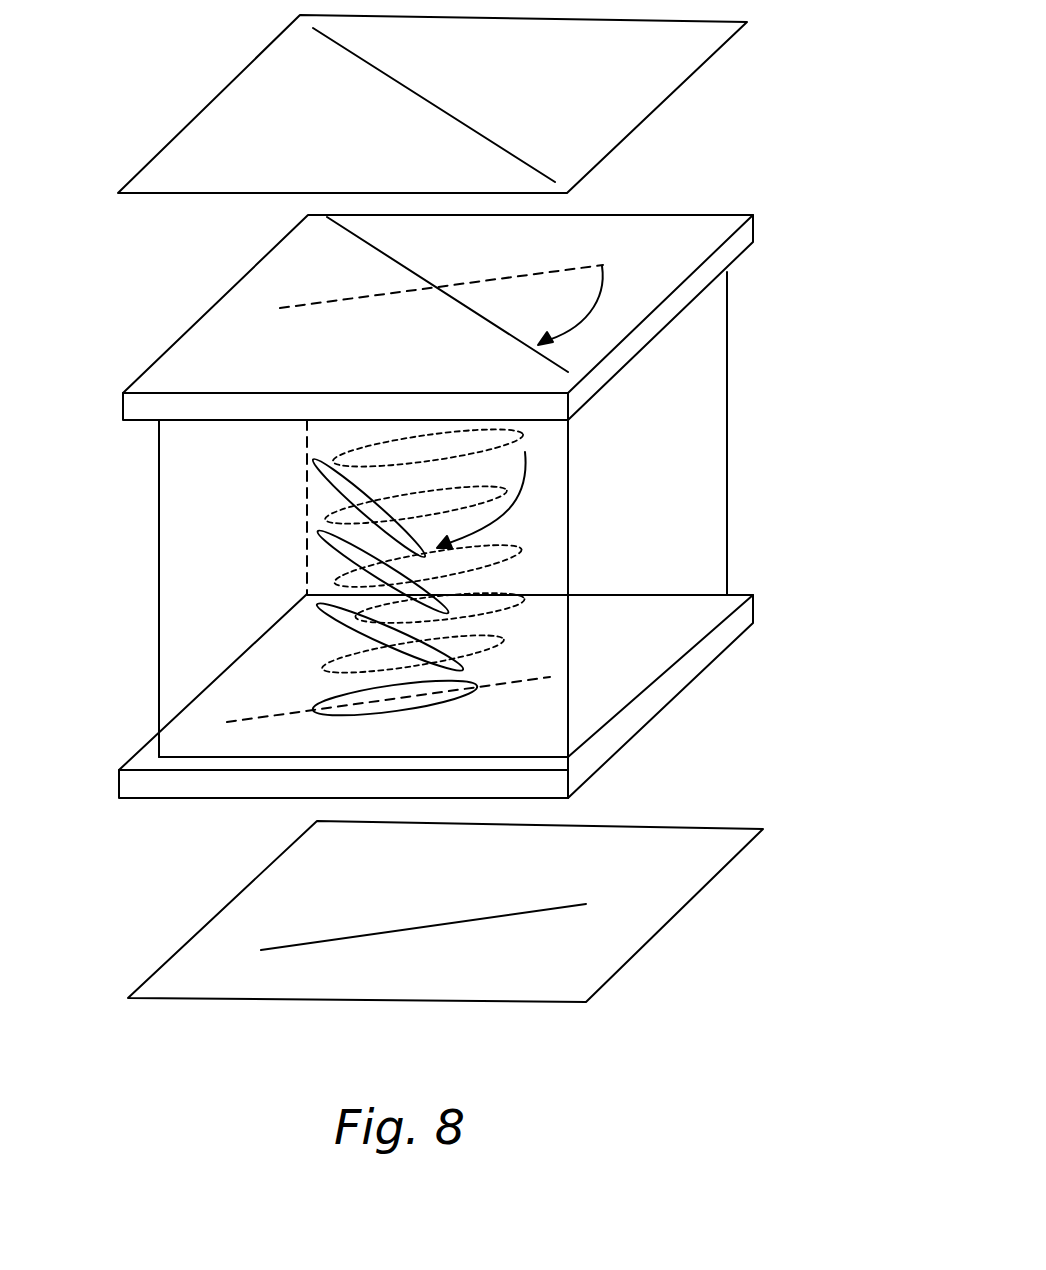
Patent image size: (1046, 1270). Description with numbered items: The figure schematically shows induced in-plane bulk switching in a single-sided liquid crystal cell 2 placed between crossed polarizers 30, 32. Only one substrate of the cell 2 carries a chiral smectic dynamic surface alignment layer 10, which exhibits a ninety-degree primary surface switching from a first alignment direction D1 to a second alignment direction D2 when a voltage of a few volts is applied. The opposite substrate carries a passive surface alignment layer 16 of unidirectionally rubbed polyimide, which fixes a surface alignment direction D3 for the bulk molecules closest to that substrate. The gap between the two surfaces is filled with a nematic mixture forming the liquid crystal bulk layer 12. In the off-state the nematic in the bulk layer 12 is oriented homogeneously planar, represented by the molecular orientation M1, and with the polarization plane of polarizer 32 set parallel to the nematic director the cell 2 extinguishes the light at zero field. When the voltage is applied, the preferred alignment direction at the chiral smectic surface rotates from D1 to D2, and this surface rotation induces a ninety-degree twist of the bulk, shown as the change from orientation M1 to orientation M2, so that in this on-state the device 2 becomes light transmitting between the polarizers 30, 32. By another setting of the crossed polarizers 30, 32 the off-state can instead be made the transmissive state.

The liquid crystal cell 2 is at (479, 484).
The first dynamic surface alignment layer 10 is at (499, 295).
The liquid crystal bulk layer 12 is at (729, 440).
The second passive surface alignment layer 16 is at (463, 696).
The crossed polarizer 30 is at (212, 101).
The crossed polarizer 32 is at (232, 925).
The first surface alignment direction D1 is at (489, 280).
The second surface alignment direction D2 is at (365, 243).
The surface alignment direction D3 is at (537, 679).
The planar bulk orientation M1 is at (378, 446).
The twisted bulk orientation M2 is at (342, 500).